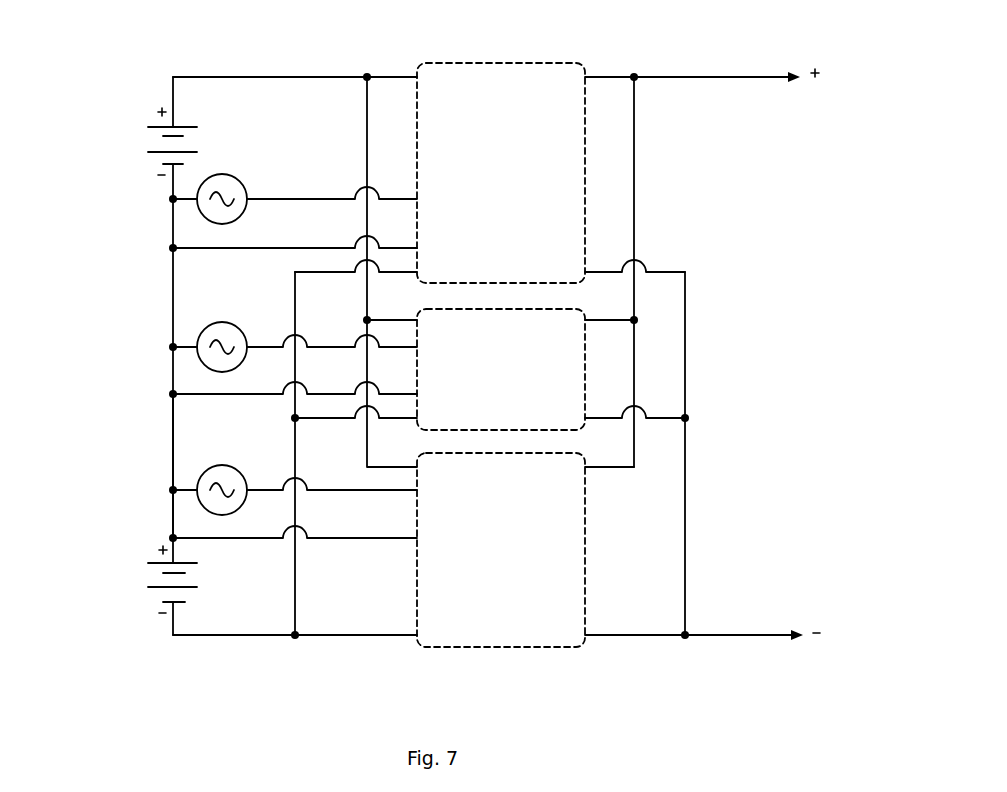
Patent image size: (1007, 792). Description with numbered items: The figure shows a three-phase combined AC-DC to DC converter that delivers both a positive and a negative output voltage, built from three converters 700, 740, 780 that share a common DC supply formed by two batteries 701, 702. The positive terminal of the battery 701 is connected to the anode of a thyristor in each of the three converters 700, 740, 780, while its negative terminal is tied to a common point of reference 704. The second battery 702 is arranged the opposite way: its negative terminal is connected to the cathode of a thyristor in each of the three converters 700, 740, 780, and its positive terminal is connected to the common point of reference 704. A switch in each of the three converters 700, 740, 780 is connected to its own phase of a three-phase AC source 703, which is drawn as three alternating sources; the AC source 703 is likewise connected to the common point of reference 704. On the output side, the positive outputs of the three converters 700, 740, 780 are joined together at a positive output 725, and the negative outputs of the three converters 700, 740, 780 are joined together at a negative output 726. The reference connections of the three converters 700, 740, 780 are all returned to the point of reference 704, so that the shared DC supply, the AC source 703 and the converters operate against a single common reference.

The converter 700 is at (465, 62).
The battery 701 is at (150, 127).
The battery 702 is at (150, 563).
The AC source 703 is at (207, 472).
The common point of reference 704 is at (173, 490).
The output 725 is at (801, 75).
The output 726 is at (805, 637).
The converter 740 is at (586, 345).
The converter 780 is at (478, 648).